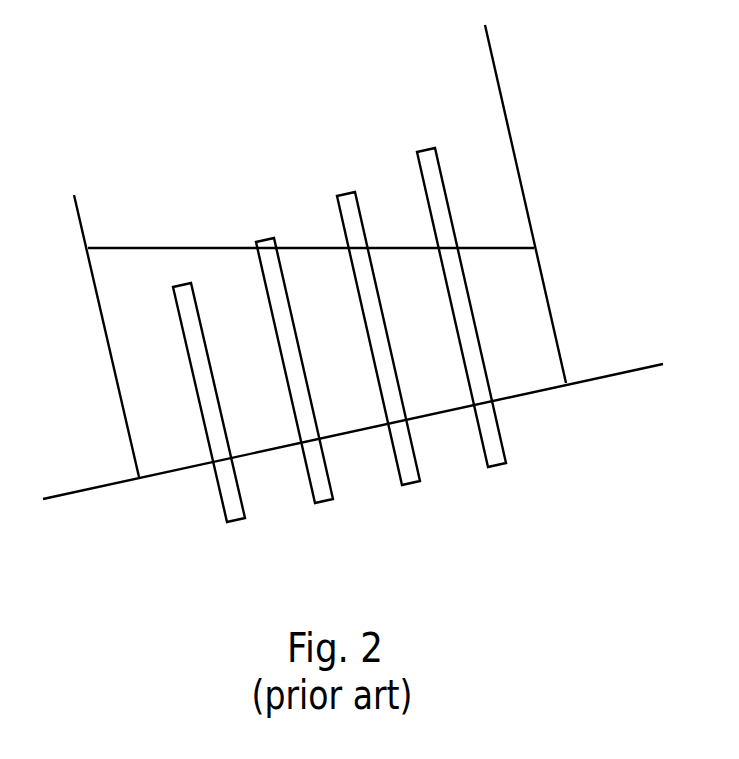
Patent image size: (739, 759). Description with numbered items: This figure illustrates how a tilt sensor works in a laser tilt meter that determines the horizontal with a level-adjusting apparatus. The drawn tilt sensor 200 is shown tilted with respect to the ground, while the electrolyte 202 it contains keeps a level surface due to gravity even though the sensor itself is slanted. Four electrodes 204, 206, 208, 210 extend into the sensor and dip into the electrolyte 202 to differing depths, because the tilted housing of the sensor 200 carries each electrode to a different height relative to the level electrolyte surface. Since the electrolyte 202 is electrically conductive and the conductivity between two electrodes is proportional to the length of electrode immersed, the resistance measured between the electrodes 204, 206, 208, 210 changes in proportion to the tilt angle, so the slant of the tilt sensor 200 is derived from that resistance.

The prior art structure 200 is at (604, 100).
The substrate / block 202 is at (517, 276).
The first slanted bar 204 is at (235, 523).
The second slanted bar 206 is at (324, 503).
The third slanted bar 208 is at (407, 485).
The fourth slanted bar 210 is at (495, 467).